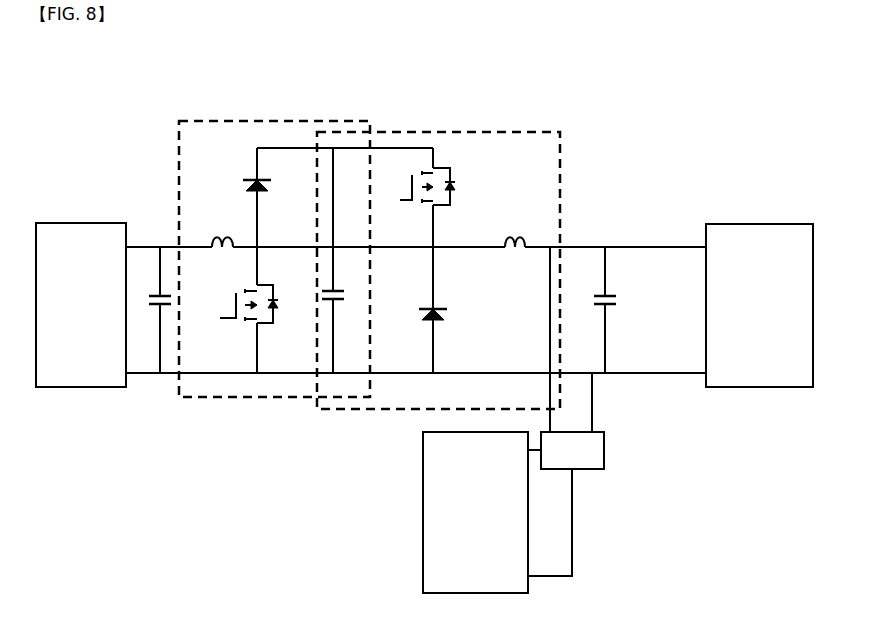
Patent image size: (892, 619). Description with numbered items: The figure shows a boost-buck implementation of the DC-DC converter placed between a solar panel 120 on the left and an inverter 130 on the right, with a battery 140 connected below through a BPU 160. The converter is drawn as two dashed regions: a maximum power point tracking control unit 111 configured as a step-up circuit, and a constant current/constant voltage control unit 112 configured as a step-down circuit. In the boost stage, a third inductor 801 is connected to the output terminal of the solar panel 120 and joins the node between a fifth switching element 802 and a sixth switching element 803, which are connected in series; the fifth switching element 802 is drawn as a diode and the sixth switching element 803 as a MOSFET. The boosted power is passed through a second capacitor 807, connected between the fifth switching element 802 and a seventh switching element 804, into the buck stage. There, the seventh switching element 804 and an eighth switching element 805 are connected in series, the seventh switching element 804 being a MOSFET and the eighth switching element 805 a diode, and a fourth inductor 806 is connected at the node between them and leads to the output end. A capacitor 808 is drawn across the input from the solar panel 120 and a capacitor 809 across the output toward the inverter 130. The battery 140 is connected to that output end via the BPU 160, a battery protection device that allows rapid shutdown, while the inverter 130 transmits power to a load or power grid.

The maximum power point tracking control unit 111 is at (267, 121).
The constant current/constant voltage control unit 112 is at (437, 131).
The solar panel 120 is at (80, 222).
The inverter 130 is at (748, 223).
The battery 140 is at (423, 517).
The BPU 160 is at (606, 452).
The third inductor 801 is at (217, 243).
The fifth switching element 802 is at (262, 190).
The sixth switching element 803 is at (263, 325).
The seventh switching element 804 is at (455, 190).
The eighth switching element 805 is at (440, 318).
The fourth inductor 806 is at (517, 252).
The second capacitor 807 is at (343, 294).
The input capacitor 808 is at (164, 308).
The output capacitor 809 is at (612, 305).